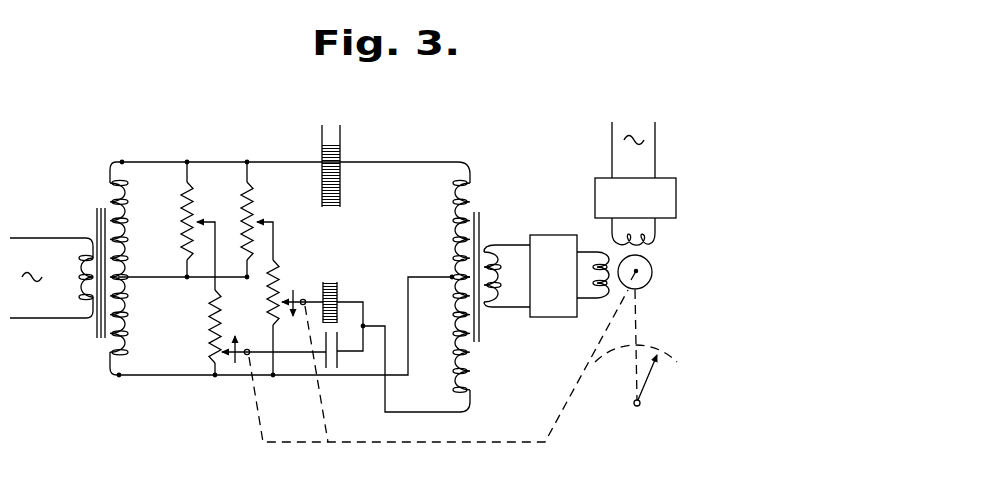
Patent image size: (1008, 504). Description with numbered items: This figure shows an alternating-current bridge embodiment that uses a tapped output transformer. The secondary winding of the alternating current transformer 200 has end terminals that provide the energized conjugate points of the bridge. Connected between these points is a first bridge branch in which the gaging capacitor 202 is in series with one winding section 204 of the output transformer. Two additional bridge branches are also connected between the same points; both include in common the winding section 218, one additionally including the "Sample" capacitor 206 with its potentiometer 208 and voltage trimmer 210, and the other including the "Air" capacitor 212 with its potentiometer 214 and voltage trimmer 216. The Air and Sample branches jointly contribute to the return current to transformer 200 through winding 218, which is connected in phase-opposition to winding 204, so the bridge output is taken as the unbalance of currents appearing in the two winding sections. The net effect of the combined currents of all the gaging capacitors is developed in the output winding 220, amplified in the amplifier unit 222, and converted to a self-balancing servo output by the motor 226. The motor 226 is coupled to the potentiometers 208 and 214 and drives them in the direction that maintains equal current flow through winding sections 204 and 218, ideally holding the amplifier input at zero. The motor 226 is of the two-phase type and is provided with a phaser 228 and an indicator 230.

The alternating current transformer 200 is at (97, 211).
The gaging capacitor 202 is at (341, 135).
The winding section of output transformer 204 is at (453, 218).
The "Sample" capacitor 206 is at (324, 284).
The potentiometer 208 is at (280, 268).
The voltage trimmer 210 is at (258, 199).
The "Air" capacitor 212 is at (337, 338).
The potentiometer 214 is at (212, 336).
The voltage trimmer 216 is at (193, 197).
The winding section of output transformer 218 is at (461, 364).
The output winding 220 is at (490, 256).
The amplifier unit 222 is at (555, 238).
The motor 226 is at (650, 264).
The phaser 228 is at (676, 194).
The indicator 230 is at (648, 372).